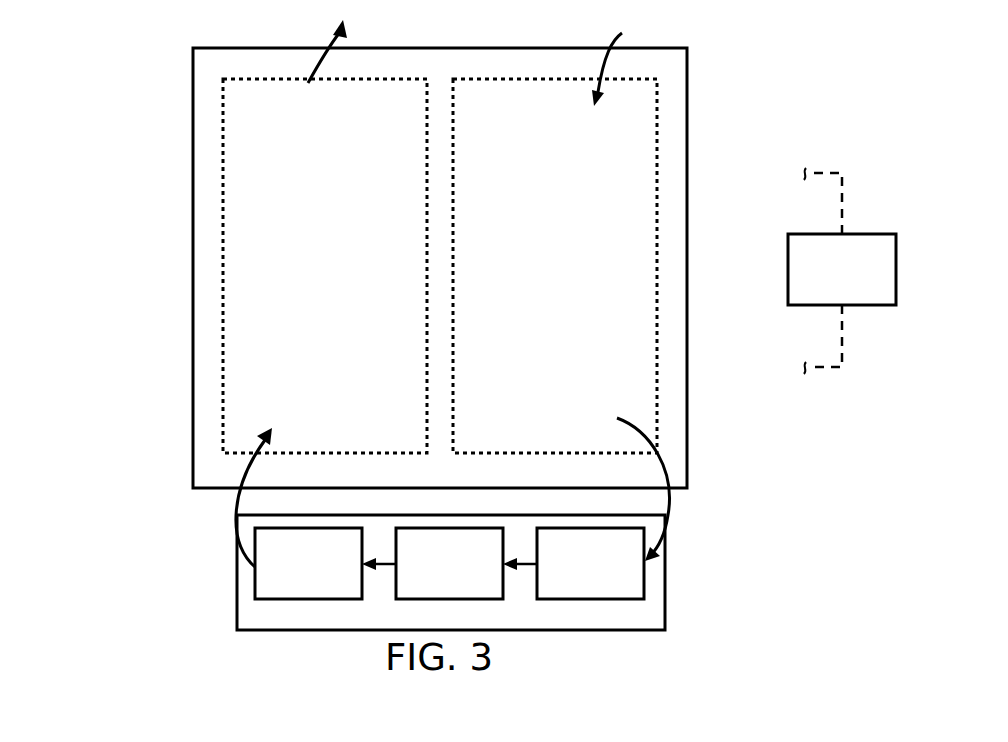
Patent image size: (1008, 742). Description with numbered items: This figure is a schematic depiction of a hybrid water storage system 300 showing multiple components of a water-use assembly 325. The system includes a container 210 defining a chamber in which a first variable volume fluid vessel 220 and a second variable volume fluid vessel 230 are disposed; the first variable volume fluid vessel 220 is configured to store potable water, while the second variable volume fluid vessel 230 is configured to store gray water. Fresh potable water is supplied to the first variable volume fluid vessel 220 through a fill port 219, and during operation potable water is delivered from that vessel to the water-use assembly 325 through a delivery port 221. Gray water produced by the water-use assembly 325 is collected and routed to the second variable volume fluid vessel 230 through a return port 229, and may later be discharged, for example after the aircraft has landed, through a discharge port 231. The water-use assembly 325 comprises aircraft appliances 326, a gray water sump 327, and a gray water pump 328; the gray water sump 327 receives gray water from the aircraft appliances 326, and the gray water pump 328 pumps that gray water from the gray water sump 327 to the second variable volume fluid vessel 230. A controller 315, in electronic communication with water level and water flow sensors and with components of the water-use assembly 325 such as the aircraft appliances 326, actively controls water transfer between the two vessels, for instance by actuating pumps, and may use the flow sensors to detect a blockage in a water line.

The hybrid water storage system 300 is at (88, 62).
The container 210 is at (192, 214).
The second variable volume fluid vessel 230 is at (223, 287).
The first variable volume fluid vessel 220 is at (657, 296).
The discharge port 231 is at (327, 62).
The fill port 219 is at (597, 62).
The return port 229 is at (232, 498).
The delivery port 221 is at (668, 500).
The controller 315 is at (825, 284).
The water-use assembly 325 is at (433, 626).
The aircraft appliances 326 is at (573, 574).
The gray water sump 327 is at (433, 574).
The gray water pump 328 is at (290, 574).